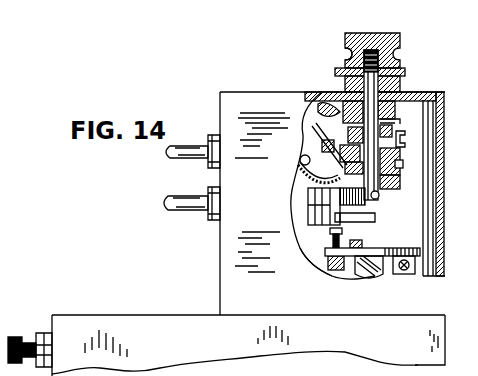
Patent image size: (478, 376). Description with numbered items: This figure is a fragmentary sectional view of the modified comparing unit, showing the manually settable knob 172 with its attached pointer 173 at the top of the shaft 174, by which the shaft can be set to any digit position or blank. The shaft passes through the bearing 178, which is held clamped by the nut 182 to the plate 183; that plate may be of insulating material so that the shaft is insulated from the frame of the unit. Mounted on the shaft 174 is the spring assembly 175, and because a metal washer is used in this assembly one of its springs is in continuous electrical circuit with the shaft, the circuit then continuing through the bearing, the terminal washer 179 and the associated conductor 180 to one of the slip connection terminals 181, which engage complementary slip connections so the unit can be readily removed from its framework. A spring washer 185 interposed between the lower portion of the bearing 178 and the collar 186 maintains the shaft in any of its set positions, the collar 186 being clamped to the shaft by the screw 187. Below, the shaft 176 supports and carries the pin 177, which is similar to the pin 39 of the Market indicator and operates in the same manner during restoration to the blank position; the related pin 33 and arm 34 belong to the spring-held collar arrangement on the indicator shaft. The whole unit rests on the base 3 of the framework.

The base 3 is at (226, 345).
The pin 33 is at (354, 244).
The arm 34 is at (333, 250).
The pin 39 is at (375, 217).
The manually settable knob 172 is at (392, 34).
The pointer 173 is at (345, 62).
The shaft 174 is at (382, 199).
The spring assembly 175 is at (308, 206).
The shaft 176 is at (384, 256).
The pin 177 is at (330, 258).
The bearing 178 is at (420, 92).
The terminal washer 179 is at (393, 98).
The conductor 180 is at (318, 112).
The slip connection terminals 181 is at (168, 197).
The nut 182 is at (343, 84).
The plate 183 is at (430, 96).
The spring washer 185 is at (386, 123).
The collar 186 is at (385, 127).
The screw 187 is at (386, 132).